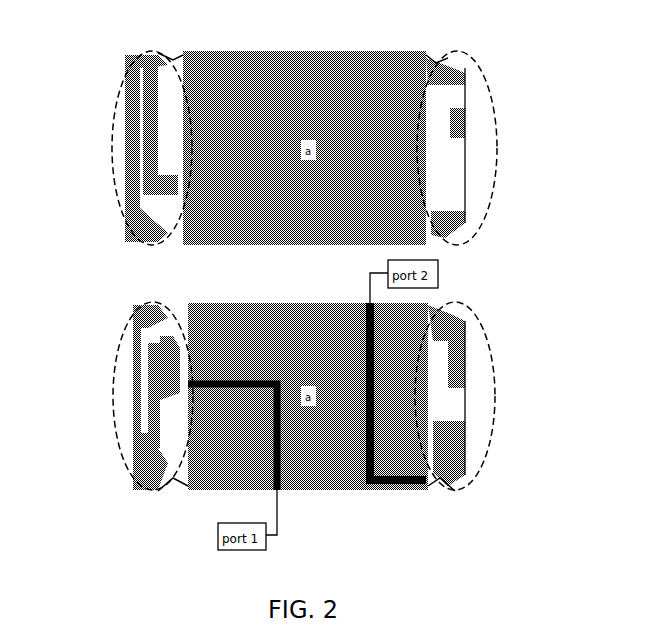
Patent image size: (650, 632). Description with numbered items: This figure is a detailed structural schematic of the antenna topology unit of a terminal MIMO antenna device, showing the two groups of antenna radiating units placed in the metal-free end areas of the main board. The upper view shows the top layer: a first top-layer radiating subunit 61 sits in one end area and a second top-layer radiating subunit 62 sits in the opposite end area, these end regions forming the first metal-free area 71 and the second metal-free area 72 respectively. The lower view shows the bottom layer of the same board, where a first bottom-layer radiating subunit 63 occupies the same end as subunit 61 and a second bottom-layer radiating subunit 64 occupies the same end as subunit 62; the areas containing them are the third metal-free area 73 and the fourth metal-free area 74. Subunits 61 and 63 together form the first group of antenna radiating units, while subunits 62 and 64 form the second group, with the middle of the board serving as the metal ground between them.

The first top-layer radiating subunit 61 is at (105, 148).
The second top-layer radiating subunit 62 is at (488, 141).
The first bottom-layer radiating subunit 63 is at (106, 378).
The second bottom-layer radiating subunit 64 is at (487, 370).
The first metal-free area 71 is at (175, 47).
The second metal-free area 72 is at (423, 53).
The third metal-free area 73 is at (170, 462).
The fourth metal-free area 74 is at (418, 440).